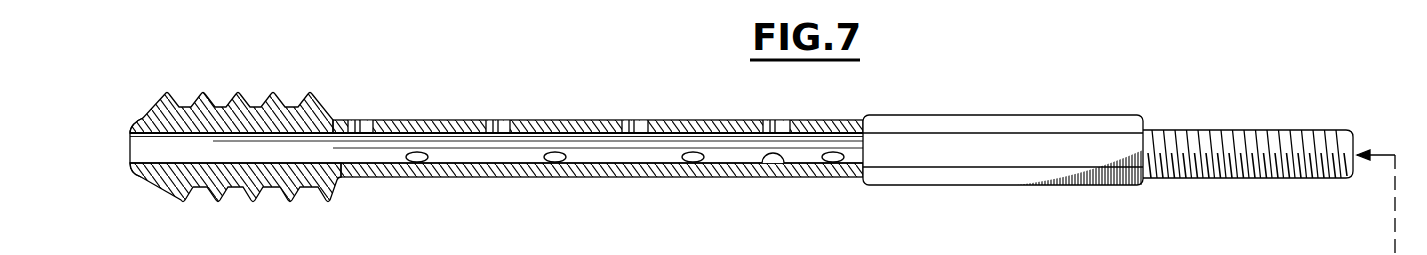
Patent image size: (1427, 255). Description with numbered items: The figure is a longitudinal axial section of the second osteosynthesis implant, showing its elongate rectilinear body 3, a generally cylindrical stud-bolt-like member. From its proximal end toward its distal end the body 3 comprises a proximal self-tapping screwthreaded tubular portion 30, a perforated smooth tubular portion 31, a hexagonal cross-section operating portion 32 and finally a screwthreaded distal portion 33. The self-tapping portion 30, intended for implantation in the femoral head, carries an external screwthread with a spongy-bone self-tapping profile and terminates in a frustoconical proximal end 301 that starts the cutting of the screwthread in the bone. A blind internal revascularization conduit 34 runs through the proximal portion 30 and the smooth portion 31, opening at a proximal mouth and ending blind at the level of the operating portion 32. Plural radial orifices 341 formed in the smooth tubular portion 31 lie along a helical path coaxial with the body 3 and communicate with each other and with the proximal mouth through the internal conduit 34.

The elongate rectilinear body 3 is at (732, 137).
The proximal self-tapping screwthreaded tubular portion 30 is at (240, 102).
The proximal end 301 is at (153, 173).
The perforated smooth tubular portion 31 is at (420, 123).
The hexagonal cross-section operating portion 32 is at (987, 172).
The screwthreaded distal portion 33 is at (1255, 168).
The blind internal revascularization conduit 34 is at (765, 160).
The radial orifices 341 is at (635, 123).